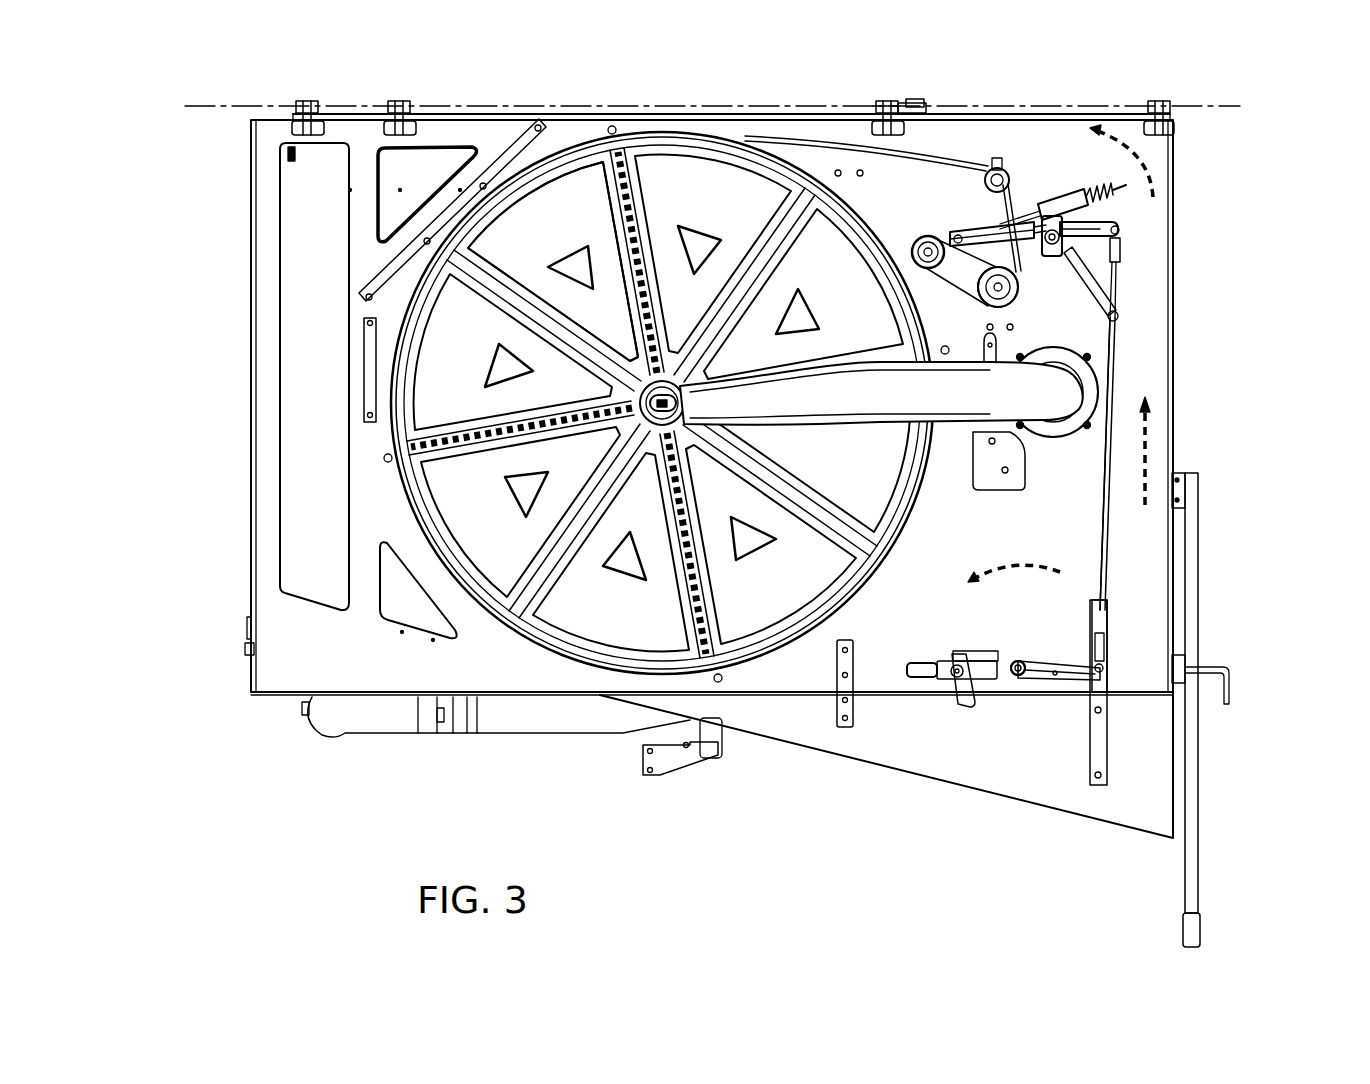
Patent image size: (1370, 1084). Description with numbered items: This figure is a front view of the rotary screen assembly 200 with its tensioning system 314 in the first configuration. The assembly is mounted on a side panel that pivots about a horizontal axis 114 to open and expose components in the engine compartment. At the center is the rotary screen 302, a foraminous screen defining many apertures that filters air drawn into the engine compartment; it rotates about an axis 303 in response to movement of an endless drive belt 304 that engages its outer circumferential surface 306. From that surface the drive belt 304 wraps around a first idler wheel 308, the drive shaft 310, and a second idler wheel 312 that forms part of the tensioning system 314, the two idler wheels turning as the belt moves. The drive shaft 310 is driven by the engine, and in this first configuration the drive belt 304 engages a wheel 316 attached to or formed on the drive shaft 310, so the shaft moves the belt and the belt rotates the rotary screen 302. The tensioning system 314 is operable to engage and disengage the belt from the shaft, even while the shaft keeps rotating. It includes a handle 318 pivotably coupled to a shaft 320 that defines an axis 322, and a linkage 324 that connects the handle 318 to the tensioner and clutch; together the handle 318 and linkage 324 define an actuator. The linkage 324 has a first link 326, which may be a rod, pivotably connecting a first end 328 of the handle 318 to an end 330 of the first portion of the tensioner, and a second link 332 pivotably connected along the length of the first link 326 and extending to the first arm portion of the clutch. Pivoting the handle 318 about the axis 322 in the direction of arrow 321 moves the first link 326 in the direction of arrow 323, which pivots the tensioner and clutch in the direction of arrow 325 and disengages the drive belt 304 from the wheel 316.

The horizontal axis 114 is at (1062, 96).
The rotary screen assembly 200 is at (250, 250).
The rotary screen 302 is at (580, 222).
The axis 303 is at (683, 407).
The endless drive belt 304 is at (803, 138).
The outer circumferential surface 306 is at (400, 468).
The first idler wheel 308 is at (990, 168).
The drive shaft 310 is at (1020, 292).
The second idler wheel 312 is at (922, 240).
The tensioning system 314 is at (1118, 236).
The wheel 316 is at (998, 287).
The handle 318 is at (968, 672).
The shaft 320 is at (1032, 664).
The arrow 321 is at (1016, 563).
The axis 322 is at (1018, 668).
The arrow 323 is at (1150, 443).
The linkage 324 is at (1105, 540).
The arrow 325 is at (1150, 165).
The first link 326 is at (1105, 464).
The first end 328 is at (1098, 685).
The end 330 is at (1098, 232).
The second link 332 is at (1097, 287).